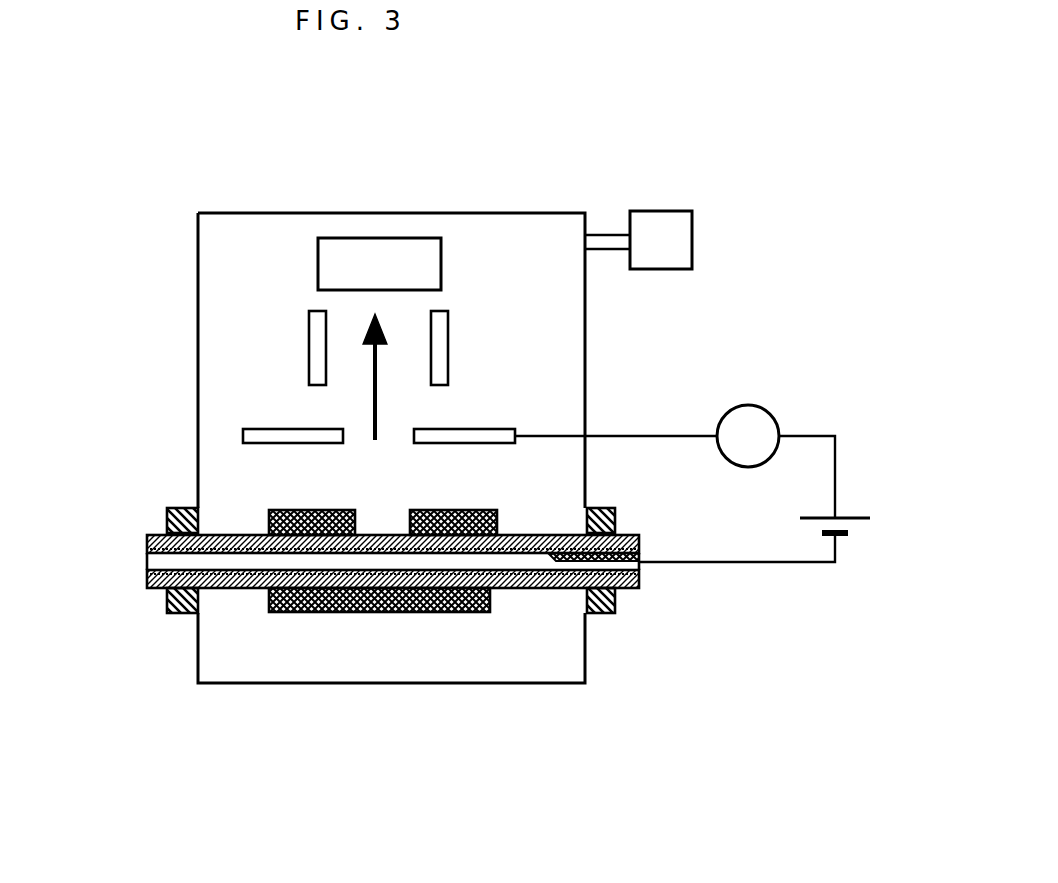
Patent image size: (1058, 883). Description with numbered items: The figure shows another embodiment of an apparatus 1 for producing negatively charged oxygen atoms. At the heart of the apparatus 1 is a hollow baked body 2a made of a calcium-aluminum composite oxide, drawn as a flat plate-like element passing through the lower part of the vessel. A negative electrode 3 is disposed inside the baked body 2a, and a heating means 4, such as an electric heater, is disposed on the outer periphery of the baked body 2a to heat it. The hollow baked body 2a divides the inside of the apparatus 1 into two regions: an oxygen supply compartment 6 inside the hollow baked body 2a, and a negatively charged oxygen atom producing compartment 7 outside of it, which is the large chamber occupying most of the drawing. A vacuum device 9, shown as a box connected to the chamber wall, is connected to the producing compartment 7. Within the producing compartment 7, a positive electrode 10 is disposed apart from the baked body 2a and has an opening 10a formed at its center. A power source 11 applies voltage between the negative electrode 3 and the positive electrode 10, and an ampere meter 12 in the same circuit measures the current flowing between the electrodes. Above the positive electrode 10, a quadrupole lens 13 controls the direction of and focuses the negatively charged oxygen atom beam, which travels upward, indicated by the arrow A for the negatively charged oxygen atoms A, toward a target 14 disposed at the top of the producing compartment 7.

The apparatus for producing negatively charged oxygen atoms 1 is at (121, 164).
The hollow baked body 2a is at (147, 537).
The negative electrode 3 is at (145, 552).
The heating means 4 is at (343, 612).
The oxygen supply compartment 6 is at (473, 612).
The negatively charged oxygen atom producing compartment 7 is at (535, 212).
The vacuum device 9 is at (638, 240).
The positive electrode 10 is at (477, 437).
The opening 10a is at (393, 433).
The power source 11 is at (852, 510).
The ampere meter 12 is at (762, 415).
The quadrupole lens 13 is at (313, 355).
The target 14 is at (382, 248).
The negatively charged oxygen atoms A is at (373, 397).